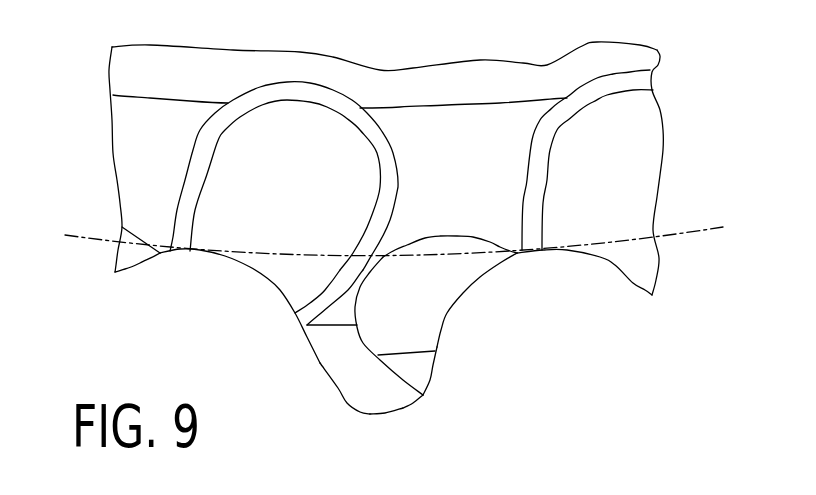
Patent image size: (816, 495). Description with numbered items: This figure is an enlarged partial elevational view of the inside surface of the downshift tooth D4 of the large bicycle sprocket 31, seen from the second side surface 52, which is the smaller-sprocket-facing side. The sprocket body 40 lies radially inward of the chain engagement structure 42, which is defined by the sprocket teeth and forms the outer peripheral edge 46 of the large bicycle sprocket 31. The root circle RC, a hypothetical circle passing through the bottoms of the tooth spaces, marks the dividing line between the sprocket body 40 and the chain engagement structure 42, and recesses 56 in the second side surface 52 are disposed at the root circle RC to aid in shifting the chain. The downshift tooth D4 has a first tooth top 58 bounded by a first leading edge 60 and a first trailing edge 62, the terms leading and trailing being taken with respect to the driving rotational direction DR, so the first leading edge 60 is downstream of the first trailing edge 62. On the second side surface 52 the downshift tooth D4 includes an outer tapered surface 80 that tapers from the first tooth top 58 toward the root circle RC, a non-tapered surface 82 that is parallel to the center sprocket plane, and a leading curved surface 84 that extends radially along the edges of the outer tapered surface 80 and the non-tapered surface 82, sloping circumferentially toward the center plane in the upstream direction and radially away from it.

The sprocket body 40 is at (633, 57).
The recesses 56 is at (218, 142).
The second side surface 52 is at (458, 193).
The chain engagement structure 42 is at (295, 313).
The non-tapered surface 82 is at (340, 315).
The first trailing edge 62 is at (357, 410).
The outer tapered surface 80 is at (373, 402).
The first tooth top 58 is at (403, 417).
The first leading edge 60 is at (430, 395).
The leading curved surface 84 is at (440, 285).
The outer peripheral edge 46 is at (633, 283).
The large bicycle sprocket 31 is at (152, 257).
The root circle RC is at (685, 233).
The downshift tooth D4 is at (362, 412).
The driving rotational direction DR is at (462, 42).